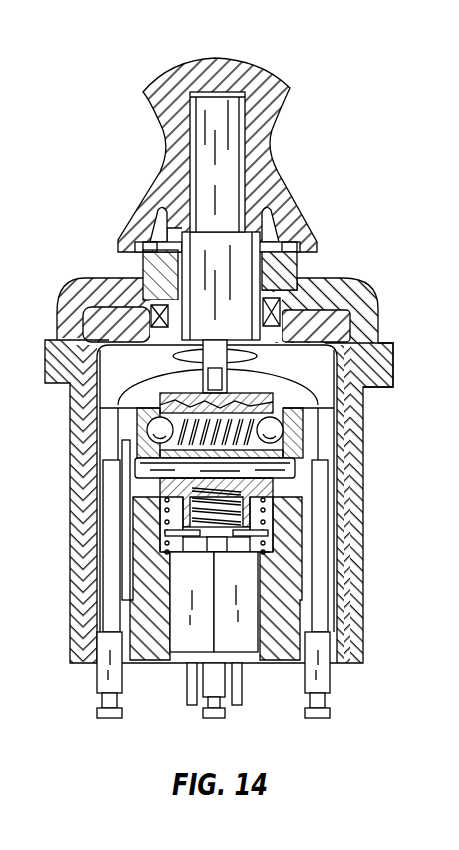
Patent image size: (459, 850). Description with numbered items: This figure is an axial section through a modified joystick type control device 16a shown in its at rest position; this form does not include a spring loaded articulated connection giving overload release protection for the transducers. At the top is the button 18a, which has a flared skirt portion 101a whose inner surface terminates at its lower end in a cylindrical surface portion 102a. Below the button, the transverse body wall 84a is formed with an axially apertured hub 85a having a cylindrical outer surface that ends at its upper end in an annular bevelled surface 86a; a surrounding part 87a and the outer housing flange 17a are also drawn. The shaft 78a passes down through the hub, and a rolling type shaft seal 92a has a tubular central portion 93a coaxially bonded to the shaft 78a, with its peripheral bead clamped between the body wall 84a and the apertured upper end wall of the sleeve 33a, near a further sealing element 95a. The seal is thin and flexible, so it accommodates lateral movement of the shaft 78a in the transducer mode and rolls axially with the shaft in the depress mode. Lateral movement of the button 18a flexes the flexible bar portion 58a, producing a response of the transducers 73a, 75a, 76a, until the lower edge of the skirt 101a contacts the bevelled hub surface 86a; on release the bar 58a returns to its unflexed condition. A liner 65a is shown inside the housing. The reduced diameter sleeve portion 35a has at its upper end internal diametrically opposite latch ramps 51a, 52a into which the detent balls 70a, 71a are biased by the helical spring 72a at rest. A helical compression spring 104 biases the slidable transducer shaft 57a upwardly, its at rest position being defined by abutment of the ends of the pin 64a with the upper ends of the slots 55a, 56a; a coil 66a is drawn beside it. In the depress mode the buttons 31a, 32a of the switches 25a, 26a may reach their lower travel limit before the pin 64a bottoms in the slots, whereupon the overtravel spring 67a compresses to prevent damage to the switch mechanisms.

The control device 16a is at (135, 169).
The button 18a is at (270, 156).
The shaft 78a is at (213, 118).
The flared skirt portion 101a is at (285, 207).
The cylindrical surface portion 102a is at (288, 244).
The annular bevelled surface 86a is at (150, 238).
The axially apertured hub 85a is at (140, 262).
The bushing 87a is at (265, 273).
The transverse body wall 84a is at (335, 280).
The sleeve 33a is at (340, 320).
The housing flange 17a is at (393, 378).
The tubular central portion 93a is at (147, 265).
The seal 95a is at (152, 317).
The shaft seal 92a is at (150, 334).
The flexible bar portion 58a is at (200, 350).
The helical spring 72a is at (157, 398).
The transducer 73a is at (210, 360).
The transducer 76a is at (212, 358).
The transducer 75a is at (230, 380).
The liner 65a is at (275, 413).
The detent ball 70a is at (153, 427).
The latch ramp 52a is at (273, 420).
The latch ramp 51a is at (195, 440).
The pin 64a is at (143, 467).
The detent ball 71a is at (280, 452).
The slot 56a is at (283, 497).
The transducer shaft 57a is at (157, 486).
The slot 55a is at (140, 500).
The reduced diameter sleeve portion 35a is at (140, 527).
The switch button 31a is at (200, 528).
The switch button 32a is at (250, 545).
The coil 66a is at (263, 510).
The helical compression spring 104 is at (263, 522).
The overtravel spring 67a is at (212, 517).
The switch 25a is at (186, 640).
The switch 26a is at (245, 640).